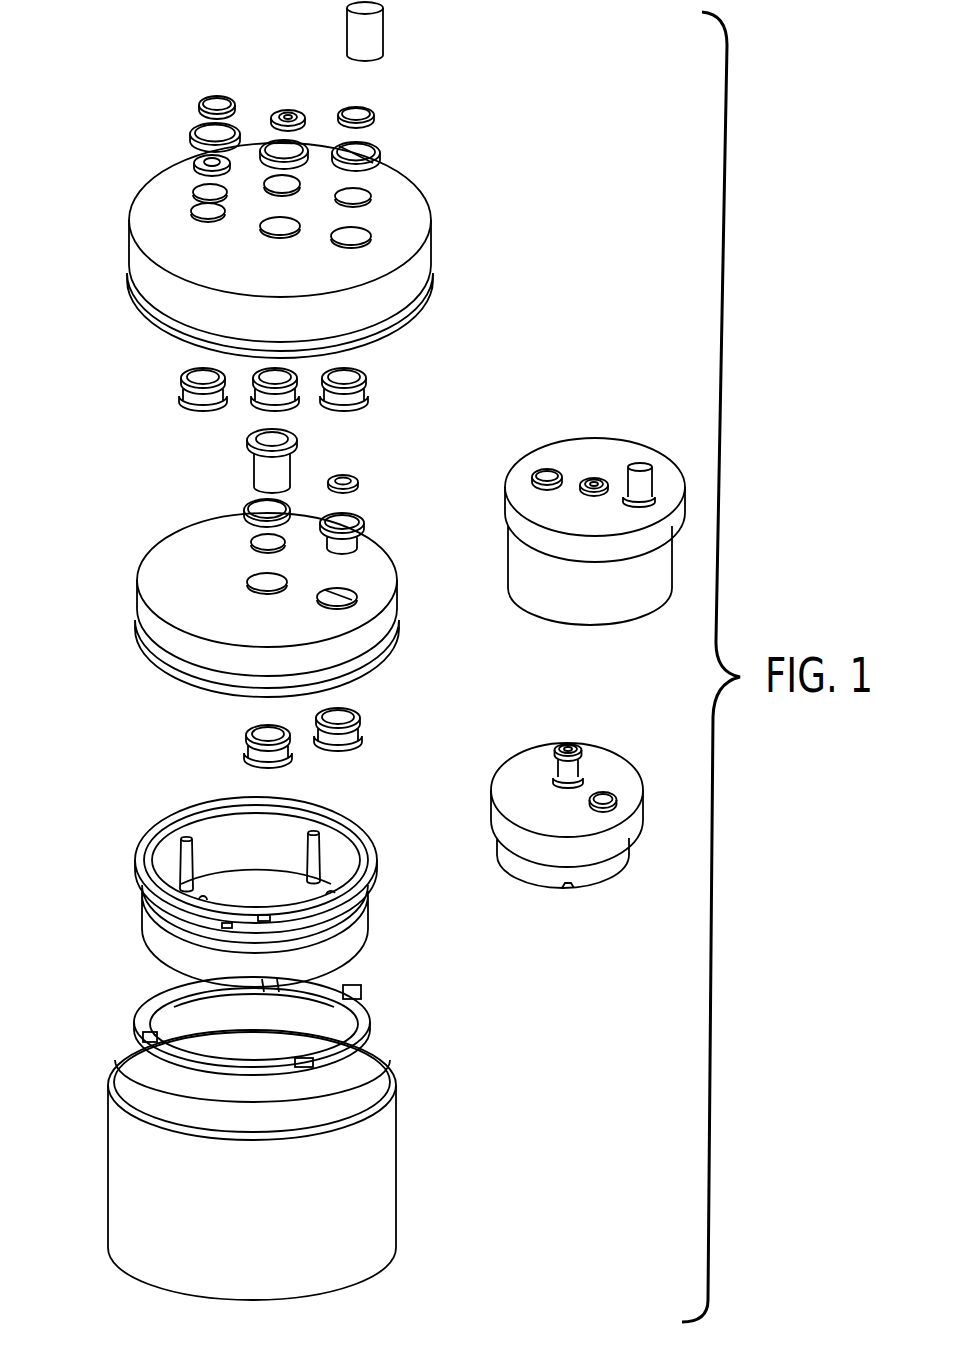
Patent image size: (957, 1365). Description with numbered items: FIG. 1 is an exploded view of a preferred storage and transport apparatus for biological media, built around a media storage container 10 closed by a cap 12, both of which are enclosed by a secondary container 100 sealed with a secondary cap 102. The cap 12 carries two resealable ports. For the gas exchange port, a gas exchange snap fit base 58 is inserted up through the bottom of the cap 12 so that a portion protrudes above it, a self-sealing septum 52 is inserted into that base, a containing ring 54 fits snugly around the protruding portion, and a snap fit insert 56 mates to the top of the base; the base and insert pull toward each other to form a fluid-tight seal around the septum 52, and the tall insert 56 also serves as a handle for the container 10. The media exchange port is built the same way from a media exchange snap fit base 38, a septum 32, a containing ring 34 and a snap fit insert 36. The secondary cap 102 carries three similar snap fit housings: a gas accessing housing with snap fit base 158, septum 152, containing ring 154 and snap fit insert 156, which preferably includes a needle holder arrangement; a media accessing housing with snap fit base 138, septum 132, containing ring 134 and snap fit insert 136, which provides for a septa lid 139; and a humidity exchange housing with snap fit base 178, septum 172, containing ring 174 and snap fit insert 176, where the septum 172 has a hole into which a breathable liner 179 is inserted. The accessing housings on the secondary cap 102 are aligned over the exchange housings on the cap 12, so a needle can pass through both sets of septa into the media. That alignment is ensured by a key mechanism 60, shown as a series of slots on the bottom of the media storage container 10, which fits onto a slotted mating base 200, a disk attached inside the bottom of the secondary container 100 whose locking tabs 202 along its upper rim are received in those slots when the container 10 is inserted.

The media storage container 10 is at (160, 840).
The cap 12 is at (388, 645).
The septum 32 is at (362, 537).
The containing ring 34 is at (366, 519).
The snap fit insert 36 is at (360, 482).
The media exchange snap fit base 38 is at (361, 714).
The septum 52 is at (248, 541).
The containing ring 54 is at (245, 512).
The snap fit insert 56 is at (249, 441).
The gas exchange snap fit base 58 is at (246, 739).
The key mechanism 60 is at (270, 990).
The secondary container 100 is at (393, 1168).
The secondary cap 102 is at (420, 300).
The septum 132 is at (372, 202).
The containing ring 134 is at (381, 152).
The snap fit insert 136 is at (376, 117).
The snap fit base 138 is at (368, 384).
The septa lid 139 is at (384, 32).
The septum 152 is at (263, 195).
The containing ring 154 is at (260, 145).
The snap fit insert 156 is at (296, 110).
The snap fit base 158 is at (253, 380).
The septum 172 is at (196, 164).
The containing ring 174 is at (195, 130).
The snap fit insert 176 is at (201, 98).
The snap fit base 178 is at (185, 383).
The breathable liner 179 is at (194, 190).
The slotted mating base 200 is at (135, 1005).
The locking tabs 202 is at (112, 1072).